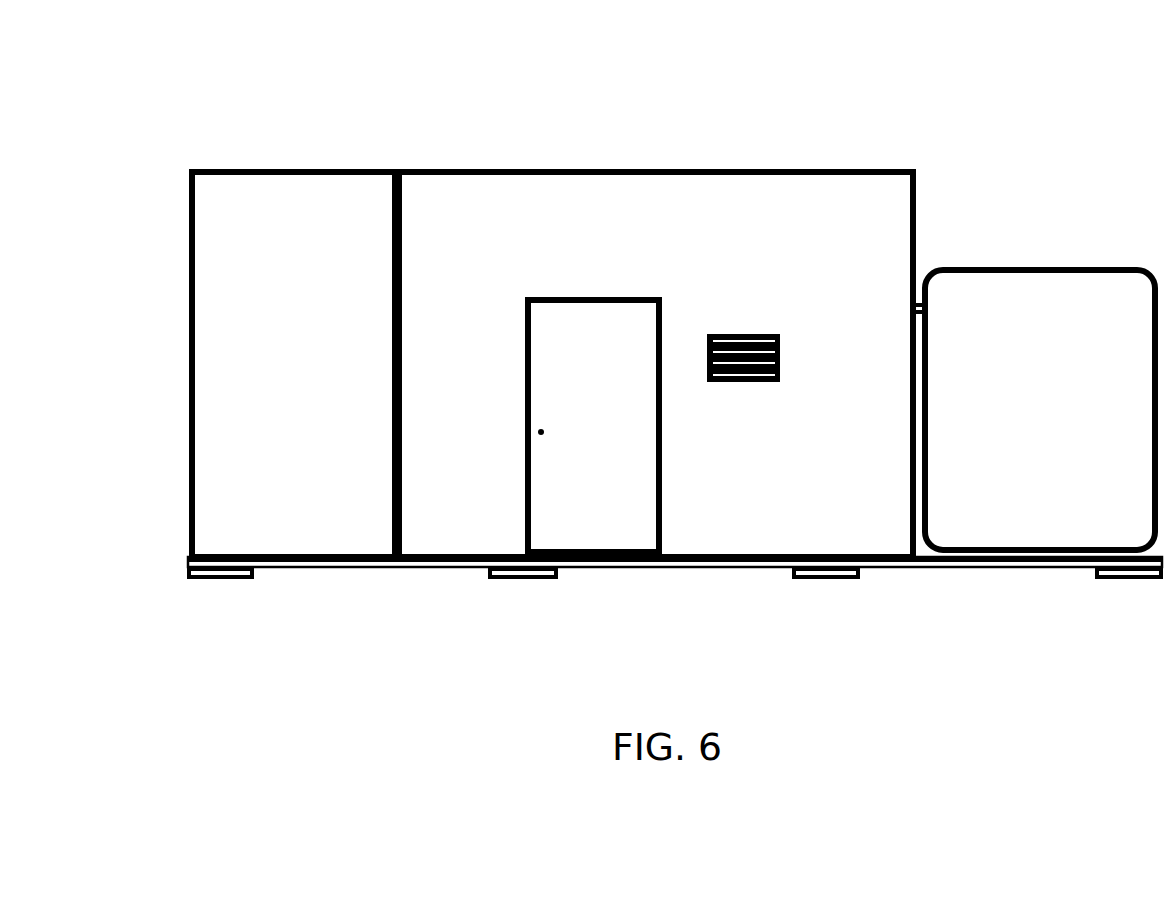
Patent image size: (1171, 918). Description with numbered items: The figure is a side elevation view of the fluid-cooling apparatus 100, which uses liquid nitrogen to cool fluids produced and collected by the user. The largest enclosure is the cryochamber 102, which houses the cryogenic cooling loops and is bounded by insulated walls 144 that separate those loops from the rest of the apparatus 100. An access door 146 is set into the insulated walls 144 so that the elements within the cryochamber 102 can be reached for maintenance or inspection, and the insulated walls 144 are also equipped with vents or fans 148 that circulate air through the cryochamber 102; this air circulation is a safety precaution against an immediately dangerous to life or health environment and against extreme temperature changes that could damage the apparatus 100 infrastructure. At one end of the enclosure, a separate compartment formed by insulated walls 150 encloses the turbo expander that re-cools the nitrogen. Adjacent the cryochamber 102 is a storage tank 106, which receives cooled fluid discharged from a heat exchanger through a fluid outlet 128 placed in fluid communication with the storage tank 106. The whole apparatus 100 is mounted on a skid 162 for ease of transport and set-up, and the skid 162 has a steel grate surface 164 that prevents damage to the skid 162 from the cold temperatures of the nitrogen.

The apparatus 100 is at (1068, 90).
The cryochamber 102 is at (773, 168).
The storage tank 106 is at (1067, 265).
The fluid outlet 128 is at (918, 298).
The insulated walls 144 is at (558, 198).
The access door 146 is at (593, 532).
The vents or fans 148 is at (735, 383).
The insulated walls 150 is at (283, 198).
The skid 162 is at (250, 582).
The steel grate surface 164 is at (905, 568).